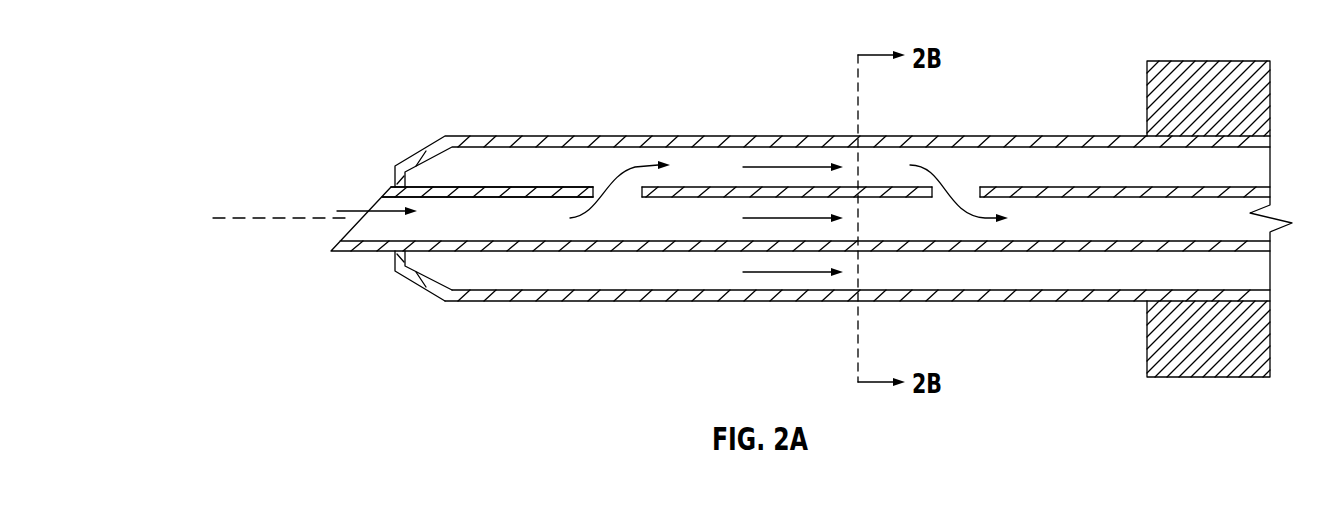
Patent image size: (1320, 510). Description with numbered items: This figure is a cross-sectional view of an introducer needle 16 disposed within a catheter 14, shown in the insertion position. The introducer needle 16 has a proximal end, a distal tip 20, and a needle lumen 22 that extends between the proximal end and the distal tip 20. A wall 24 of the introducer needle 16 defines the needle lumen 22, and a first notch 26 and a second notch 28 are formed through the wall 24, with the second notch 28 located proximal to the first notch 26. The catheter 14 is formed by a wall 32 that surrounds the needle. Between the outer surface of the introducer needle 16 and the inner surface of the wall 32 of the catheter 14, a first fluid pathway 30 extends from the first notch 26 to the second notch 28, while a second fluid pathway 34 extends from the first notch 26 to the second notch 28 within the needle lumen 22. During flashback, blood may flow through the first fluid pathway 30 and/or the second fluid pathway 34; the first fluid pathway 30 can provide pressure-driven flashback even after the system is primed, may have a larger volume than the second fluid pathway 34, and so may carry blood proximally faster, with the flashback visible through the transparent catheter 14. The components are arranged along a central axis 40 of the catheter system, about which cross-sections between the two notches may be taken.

The catheter 14 is at (484, 314).
The introducer needle 16 is at (1056, 176).
The distal tip 20 is at (368, 209).
The needle lumen 22 is at (516, 226).
The wall 24 is at (507, 187).
The first notch 26 is at (595, 187).
The second notch 28 is at (973, 187).
The first fluid pathway 30 is at (783, 167).
The wall 32 is at (565, 302).
The second fluid pathway 34 is at (757, 217).
The central axis 40 is at (272, 220).